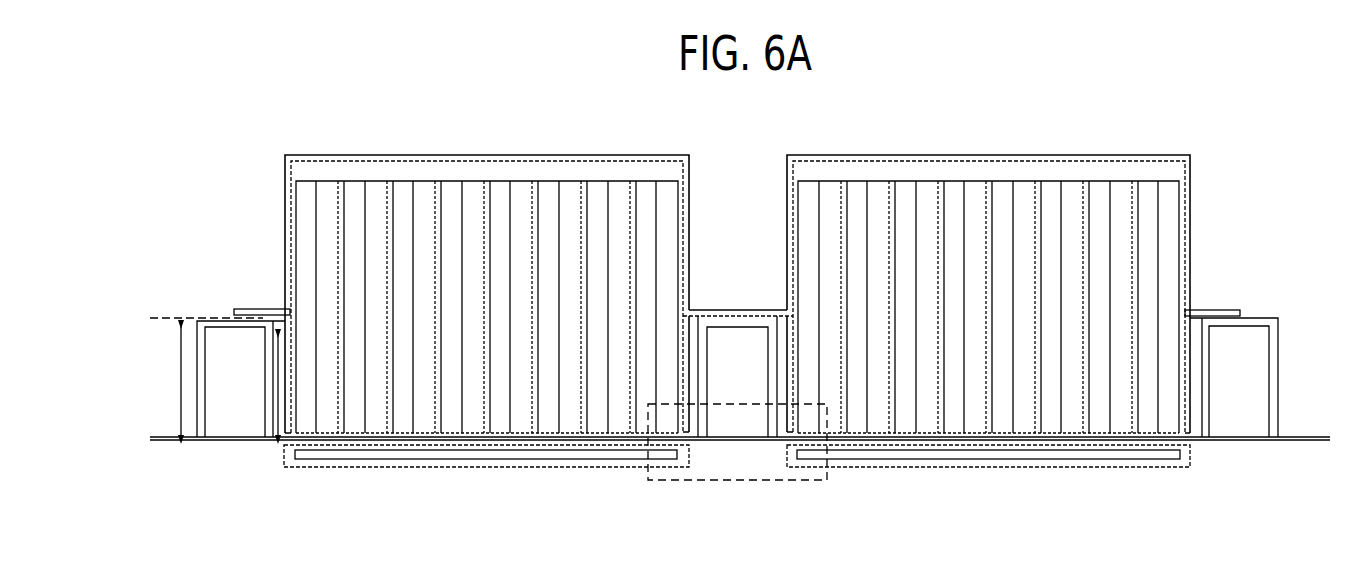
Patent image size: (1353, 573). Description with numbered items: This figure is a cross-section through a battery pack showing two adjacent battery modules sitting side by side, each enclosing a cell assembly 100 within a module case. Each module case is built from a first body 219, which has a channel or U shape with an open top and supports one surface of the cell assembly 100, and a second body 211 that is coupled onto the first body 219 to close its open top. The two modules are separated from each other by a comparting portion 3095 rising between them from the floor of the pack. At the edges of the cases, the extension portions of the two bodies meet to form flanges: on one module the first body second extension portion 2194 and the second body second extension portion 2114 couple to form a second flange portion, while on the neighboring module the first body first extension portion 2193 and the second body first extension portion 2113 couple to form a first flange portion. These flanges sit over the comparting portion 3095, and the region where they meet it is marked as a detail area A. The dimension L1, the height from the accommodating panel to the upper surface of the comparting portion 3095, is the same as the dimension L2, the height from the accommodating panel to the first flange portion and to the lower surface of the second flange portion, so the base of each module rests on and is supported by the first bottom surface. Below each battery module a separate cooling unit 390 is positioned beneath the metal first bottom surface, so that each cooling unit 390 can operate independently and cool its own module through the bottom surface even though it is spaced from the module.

The cell assembly 100 is at (292, 205).
The second body 211 is at (612, 152).
The second body first extension portion 2113 is at (763, 316).
The second body second extension portion 2114 is at (712, 310).
The first body first extension portion 2193 is at (778, 317).
The first body second extension portion 2194 is at (697, 317).
The first body 219 is at (420, 449).
The cooling unit 390 is at (526, 466).
The comparting portion 3095 is at (762, 418).
The region A is at (775, 482).
The height L1 is at (206, 376).
The height L2 is at (277, 352).